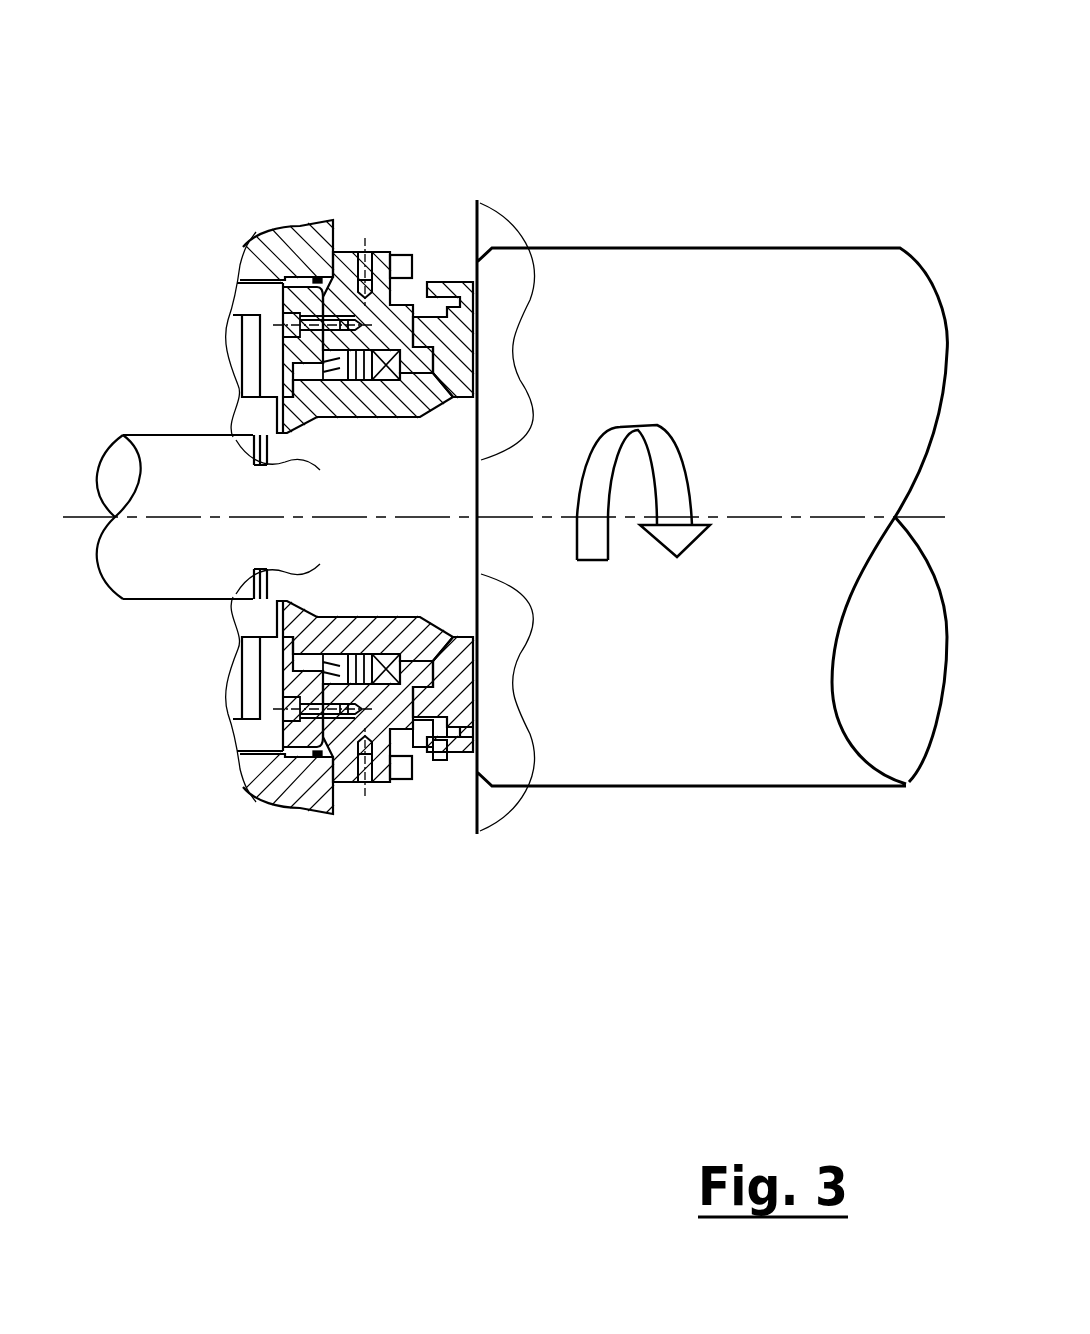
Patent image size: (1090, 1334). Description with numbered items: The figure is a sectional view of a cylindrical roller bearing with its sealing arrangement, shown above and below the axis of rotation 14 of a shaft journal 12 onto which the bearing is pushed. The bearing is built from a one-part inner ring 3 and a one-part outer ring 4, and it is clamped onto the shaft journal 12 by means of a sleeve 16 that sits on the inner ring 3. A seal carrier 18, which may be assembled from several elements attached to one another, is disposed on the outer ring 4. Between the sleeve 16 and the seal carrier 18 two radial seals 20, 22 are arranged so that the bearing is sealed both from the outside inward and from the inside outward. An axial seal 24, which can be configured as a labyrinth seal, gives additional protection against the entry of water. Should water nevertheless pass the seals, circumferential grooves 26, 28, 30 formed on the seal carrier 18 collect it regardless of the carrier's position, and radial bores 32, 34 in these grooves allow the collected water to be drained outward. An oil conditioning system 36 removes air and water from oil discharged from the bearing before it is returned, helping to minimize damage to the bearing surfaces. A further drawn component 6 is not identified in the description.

The inner ring 3 is at (247, 425).
The outer ring 4 is at (252, 298).
The housing insert 6 is at (242, 345).
The shaft journal 12 is at (770, 287).
The axis of rotation 14 is at (686, 489).
The sleeve 16 is at (500, 337).
The seal carrier 18 is at (250, 258).
The radial seal 20 is at (393, 650).
The radial seal 22 is at (333, 650).
The axial seal 24 is at (468, 353).
The circumferential groove 26 is at (405, 295).
The circumferential groove 28 is at (455, 390).
The circumferential groove 30 is at (447, 717).
The radial bore 32 is at (462, 713).
The radial bore 34 is at (435, 730).
The oil conditioning system 36 is at (432, 318).